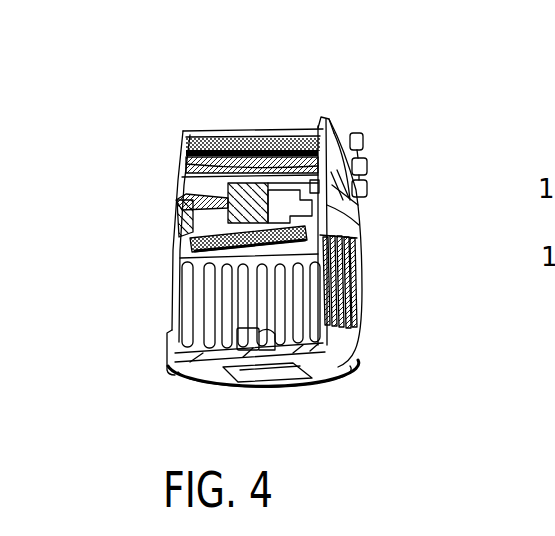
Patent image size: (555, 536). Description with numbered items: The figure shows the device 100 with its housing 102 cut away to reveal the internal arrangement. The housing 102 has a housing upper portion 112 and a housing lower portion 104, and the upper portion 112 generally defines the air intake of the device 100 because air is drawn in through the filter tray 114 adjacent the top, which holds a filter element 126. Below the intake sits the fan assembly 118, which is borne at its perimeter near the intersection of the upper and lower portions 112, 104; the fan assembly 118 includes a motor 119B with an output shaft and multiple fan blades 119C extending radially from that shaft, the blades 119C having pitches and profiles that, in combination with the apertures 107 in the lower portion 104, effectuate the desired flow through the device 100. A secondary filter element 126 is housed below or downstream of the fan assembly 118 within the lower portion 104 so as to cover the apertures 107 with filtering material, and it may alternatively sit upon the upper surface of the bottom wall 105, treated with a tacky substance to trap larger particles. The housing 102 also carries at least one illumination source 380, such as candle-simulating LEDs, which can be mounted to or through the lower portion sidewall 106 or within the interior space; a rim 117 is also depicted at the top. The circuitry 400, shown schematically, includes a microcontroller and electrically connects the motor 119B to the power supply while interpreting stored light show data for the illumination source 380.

The device 100 is at (294, 92).
The housing 102 is at (371, 260).
The housing lower portion 104 is at (373, 362).
The bottom wall 105 is at (208, 378).
The lower portion sidewall 106 is at (352, 343).
The apertures 107 is at (358, 293).
The housing upper portion 112 is at (348, 126).
The filter tray 114 is at (226, 186).
The top rim 117 is at (192, 130).
The fan assembly 118 is at (322, 206).
The motor 119B is at (176, 197).
The fan blades 119C is at (173, 243).
The filter element 126 is at (222, 128).
The illumination source 380 is at (370, 188).
The circuitry 400 is at (281, 370).